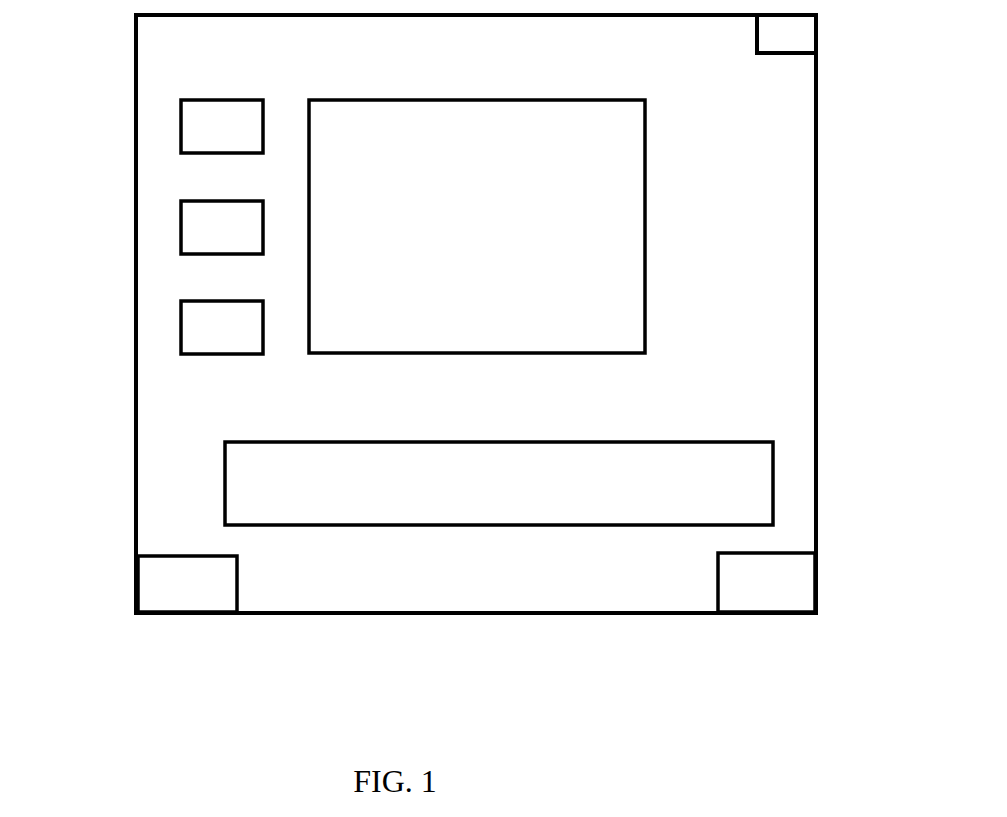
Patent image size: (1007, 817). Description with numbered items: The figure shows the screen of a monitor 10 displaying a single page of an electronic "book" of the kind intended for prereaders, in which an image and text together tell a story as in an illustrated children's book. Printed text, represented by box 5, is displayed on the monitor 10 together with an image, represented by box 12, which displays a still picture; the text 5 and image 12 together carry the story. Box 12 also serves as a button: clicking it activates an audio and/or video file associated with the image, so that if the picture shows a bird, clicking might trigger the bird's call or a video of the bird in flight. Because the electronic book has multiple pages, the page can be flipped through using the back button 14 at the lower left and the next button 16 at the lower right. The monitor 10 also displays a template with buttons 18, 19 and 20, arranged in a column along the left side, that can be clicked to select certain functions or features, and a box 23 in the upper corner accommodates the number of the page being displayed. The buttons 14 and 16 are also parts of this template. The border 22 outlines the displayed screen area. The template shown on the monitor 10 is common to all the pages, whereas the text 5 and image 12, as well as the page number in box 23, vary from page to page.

The monitor 10 is at (124, 657).
The screen border 22 is at (645, 15).
The box 23 is at (818, 33).
The button 18 is at (181, 128).
The button 19 is at (181, 227).
The button 20 is at (181, 329).
The image 12 is at (645, 162).
The text 5 is at (634, 442).
The back button 14 is at (238, 583).
The next button 16 is at (718, 595).